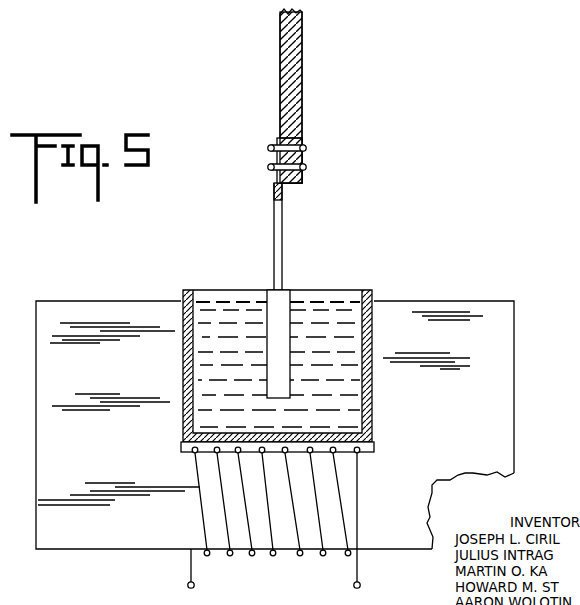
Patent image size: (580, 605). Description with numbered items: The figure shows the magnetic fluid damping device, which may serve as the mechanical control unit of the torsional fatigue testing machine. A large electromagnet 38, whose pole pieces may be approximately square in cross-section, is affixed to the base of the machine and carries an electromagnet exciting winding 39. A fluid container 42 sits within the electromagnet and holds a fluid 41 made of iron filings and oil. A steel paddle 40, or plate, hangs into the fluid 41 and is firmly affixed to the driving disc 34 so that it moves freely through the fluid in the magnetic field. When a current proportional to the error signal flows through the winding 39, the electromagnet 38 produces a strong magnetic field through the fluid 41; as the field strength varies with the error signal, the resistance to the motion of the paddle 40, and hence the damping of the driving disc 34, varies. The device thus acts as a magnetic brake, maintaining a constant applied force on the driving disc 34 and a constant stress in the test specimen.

The driving disc 34 is at (296, 82).
The electromagnet 38 is at (490, 358).
The electromagnet exciting winding 39 is at (320, 556).
The steel paddle 40 is at (283, 295).
The fluid 41 is at (233, 323).
The fluid container 42 is at (367, 292).